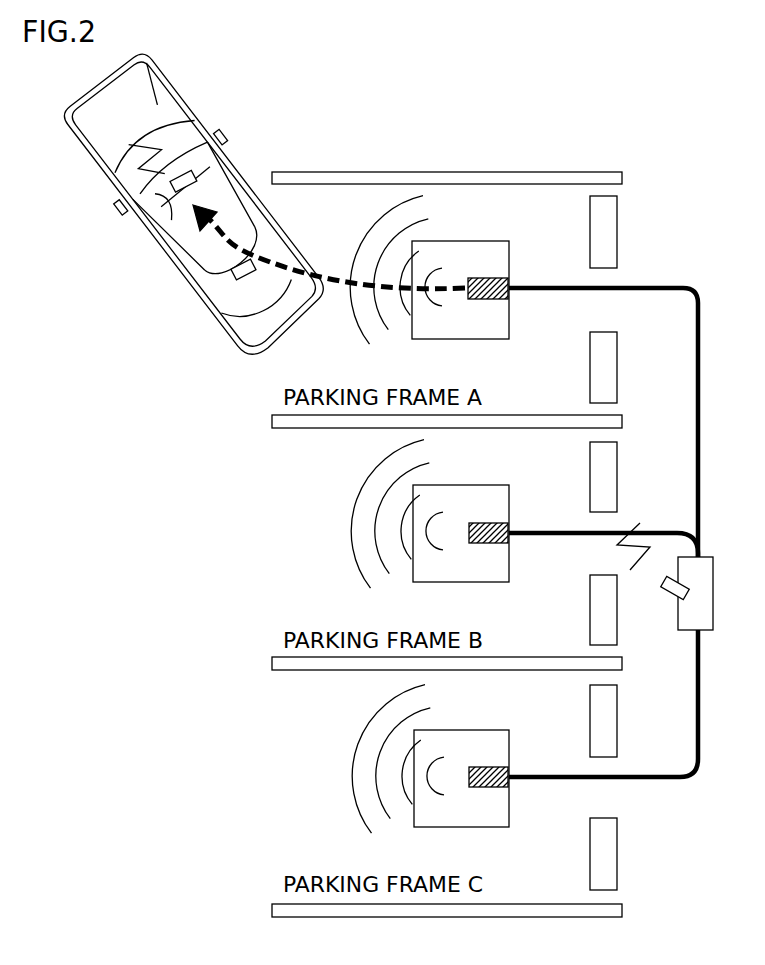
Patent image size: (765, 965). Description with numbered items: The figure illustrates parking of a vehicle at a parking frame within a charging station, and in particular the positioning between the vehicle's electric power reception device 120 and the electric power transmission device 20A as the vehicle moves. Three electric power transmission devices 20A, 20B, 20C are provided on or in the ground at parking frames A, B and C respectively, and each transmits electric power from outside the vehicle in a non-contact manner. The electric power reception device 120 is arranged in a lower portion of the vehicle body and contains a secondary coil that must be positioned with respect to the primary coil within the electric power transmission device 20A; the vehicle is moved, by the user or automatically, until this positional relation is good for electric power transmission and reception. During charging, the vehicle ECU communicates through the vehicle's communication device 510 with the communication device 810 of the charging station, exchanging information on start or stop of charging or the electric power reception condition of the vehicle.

The electric power transmission device 20A is at (487, 278).
The electric power transmission device 20B is at (488, 523).
The electric power transmission device 20C is at (488, 767).
The communication device 810 is at (670, 598).
The communication device 510 is at (160, 226).
The electric power reception device 120 is at (235, 275).